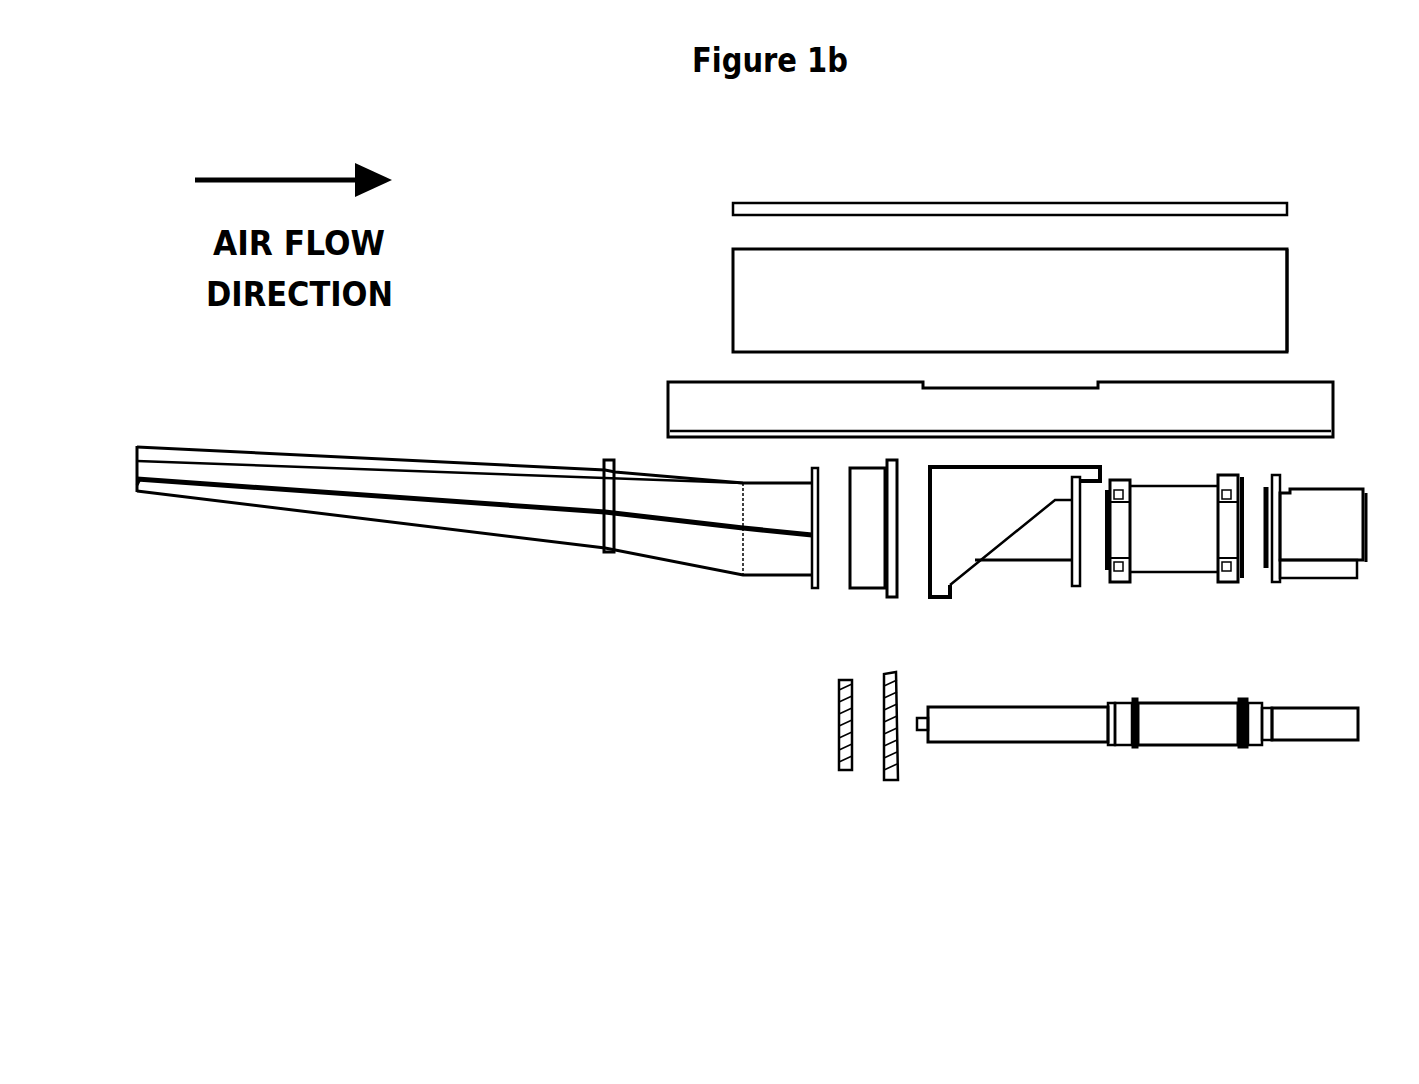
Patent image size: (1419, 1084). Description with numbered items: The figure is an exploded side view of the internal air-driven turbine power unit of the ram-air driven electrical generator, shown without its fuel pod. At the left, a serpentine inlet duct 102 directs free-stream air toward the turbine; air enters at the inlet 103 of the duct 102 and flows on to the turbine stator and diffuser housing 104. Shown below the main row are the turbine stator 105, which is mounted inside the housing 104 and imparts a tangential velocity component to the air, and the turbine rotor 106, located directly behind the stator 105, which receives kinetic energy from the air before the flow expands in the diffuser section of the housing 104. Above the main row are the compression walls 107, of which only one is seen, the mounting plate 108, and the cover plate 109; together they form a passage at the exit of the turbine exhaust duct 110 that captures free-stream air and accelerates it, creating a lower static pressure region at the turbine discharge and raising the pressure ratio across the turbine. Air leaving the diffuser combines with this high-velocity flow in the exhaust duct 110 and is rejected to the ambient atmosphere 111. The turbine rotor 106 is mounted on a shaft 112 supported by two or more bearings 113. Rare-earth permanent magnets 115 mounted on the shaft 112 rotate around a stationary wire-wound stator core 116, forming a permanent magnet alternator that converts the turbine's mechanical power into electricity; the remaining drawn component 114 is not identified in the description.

The serpentine inlet duct 102 is at (558, 533).
The inlet 103 is at (133, 485).
The turbine stator and diffuser housing 104 is at (868, 572).
The turbine stator 105 is at (838, 762).
The turbine rotor 106 is at (884, 773).
The compression walls 107 is at (758, 303).
The mounting plate 108 is at (687, 405).
The cover plate 109 is at (1205, 205).
The turbine exhaust duct 110 is at (955, 560).
The ambient atmosphere 111 is at (1248, 303).
The shaft 112 is at (968, 727).
The bearings 113 is at (1022, 545).
The motor housing 114 is at (1318, 547).
The rare-earth permanent magnets 115 is at (1178, 727).
The stationary wire-wound stator core 116 is at (1163, 557).